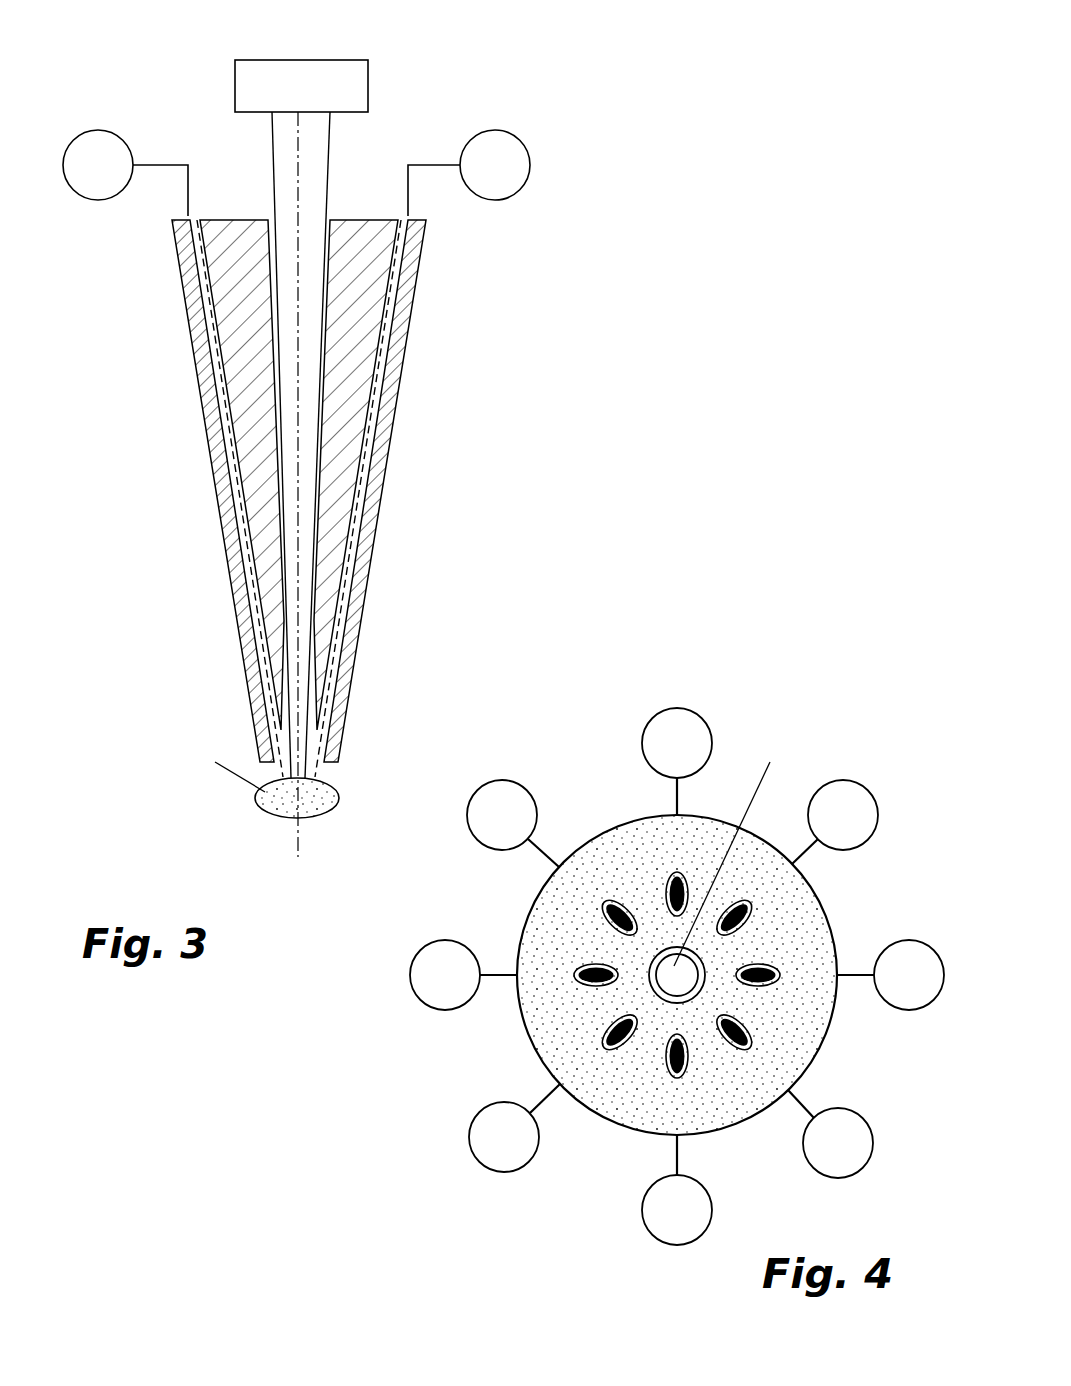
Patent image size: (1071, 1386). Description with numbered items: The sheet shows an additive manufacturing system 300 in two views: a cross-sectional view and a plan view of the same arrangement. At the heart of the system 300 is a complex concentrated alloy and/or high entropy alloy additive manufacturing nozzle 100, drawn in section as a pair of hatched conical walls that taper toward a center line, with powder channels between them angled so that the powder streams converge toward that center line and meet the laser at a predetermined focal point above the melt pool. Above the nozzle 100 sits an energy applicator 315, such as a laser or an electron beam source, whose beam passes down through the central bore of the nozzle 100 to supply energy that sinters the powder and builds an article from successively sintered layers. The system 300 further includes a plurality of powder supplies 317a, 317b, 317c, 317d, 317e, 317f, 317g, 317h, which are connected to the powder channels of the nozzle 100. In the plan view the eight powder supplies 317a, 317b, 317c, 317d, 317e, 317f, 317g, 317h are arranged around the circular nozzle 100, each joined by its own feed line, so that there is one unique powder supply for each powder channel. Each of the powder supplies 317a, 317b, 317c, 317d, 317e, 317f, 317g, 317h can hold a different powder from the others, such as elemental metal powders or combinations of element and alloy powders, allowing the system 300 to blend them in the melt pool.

In FIG. 3, the additive manufacturing system 300 is at (287, 449).
In FIG. 4, the additive manufacturing system 300 is at (666, 902).
In FIG. 3, the energy applicator 315 is at (348, 61).
In FIG. 3, the additive manufacturing nozzle 100 is at (180, 412).
In FIG. 4, the additive manufacturing nozzle 100 is at (593, 833).
In FIG. 3, the powder supply 317a is at (98, 201).
In FIG. 4, the powder supply 317a is at (436, 1010).
In FIG. 4, the powder supply 317b is at (512, 1172).
In FIG. 3, the powder supply 317c is at (495, 201).
In FIG. 4, the powder supply 317c is at (643, 1218).
In FIG. 4, the powder supply 317d is at (863, 1118).
In FIG. 4, the powder supply 317e is at (902, 942).
In FIG. 4, the powder supply 317f is at (868, 840).
In FIG. 4, the powder supply 317g is at (693, 713).
In FIG. 4, the powder supply 317h is at (500, 780).